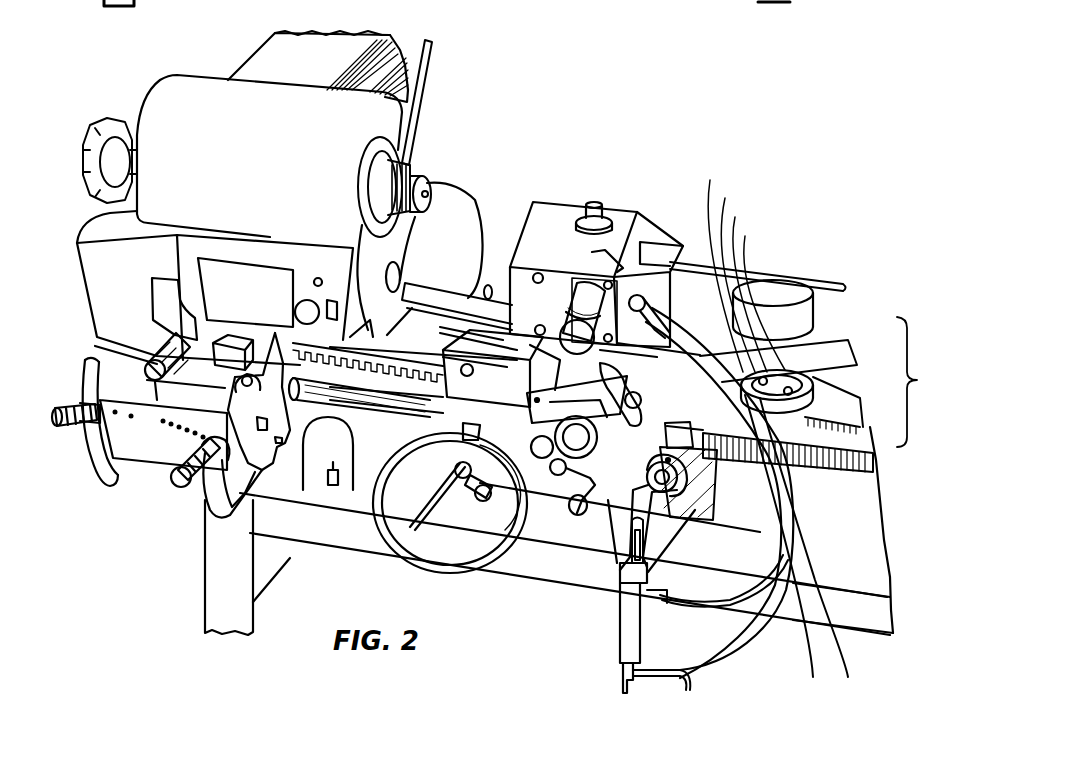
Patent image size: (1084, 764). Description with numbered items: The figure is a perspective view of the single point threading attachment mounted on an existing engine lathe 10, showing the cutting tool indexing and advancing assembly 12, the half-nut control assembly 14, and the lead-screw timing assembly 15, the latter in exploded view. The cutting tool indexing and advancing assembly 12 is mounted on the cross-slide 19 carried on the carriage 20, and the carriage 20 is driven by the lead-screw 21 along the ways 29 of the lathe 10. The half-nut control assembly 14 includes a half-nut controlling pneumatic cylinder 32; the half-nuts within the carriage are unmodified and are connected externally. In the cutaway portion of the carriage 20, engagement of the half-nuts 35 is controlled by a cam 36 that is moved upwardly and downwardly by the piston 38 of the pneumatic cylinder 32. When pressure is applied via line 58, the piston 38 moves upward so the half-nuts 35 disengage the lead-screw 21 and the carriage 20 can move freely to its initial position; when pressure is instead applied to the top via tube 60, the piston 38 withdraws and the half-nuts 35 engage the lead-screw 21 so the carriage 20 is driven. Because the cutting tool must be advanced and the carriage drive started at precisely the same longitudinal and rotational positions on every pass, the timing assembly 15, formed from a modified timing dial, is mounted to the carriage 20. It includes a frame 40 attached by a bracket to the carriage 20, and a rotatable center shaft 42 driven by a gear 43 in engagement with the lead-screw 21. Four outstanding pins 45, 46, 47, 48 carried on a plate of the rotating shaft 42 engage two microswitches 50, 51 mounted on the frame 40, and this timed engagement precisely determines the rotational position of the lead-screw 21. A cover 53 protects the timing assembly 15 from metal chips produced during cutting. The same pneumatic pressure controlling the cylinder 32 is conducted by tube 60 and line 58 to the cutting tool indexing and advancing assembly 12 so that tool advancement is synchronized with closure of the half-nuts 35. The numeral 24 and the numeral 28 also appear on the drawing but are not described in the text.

The engine lathe 10 is at (516, 152).
The cutting tool indexing and advancing assembly 12 is at (587, 182).
The half-nut control assembly 14 is at (688, 559).
The lead-screw timing assembly 15 is at (817, 375).
The cross-slide 19 is at (545, 380).
The carriage 20 is at (568, 514).
The lead-screw 21 is at (860, 480).
The rod 24 is at (823, 279).
The motor 28 is at (236, 161).
The ways 29 is at (463, 300).
The pneumatic cylinder 32 is at (618, 623).
The half-nuts 35 is at (712, 478).
The cam 36 is at (688, 483).
The piston 38 is at (631, 536).
The frame 40 is at (795, 366).
The center shaft 42 is at (851, 423).
The gear 43 is at (785, 486).
The pin 45 is at (764, 295).
The pin 46 is at (750, 287).
The pin 47 is at (784, 430).
The pin 48 is at (760, 421).
The microswitch 50 is at (806, 388).
The microswitch 51 is at (728, 350).
The cover 53 is at (771, 290).
The line 58 is at (733, 650).
The tube 60 is at (712, 595).